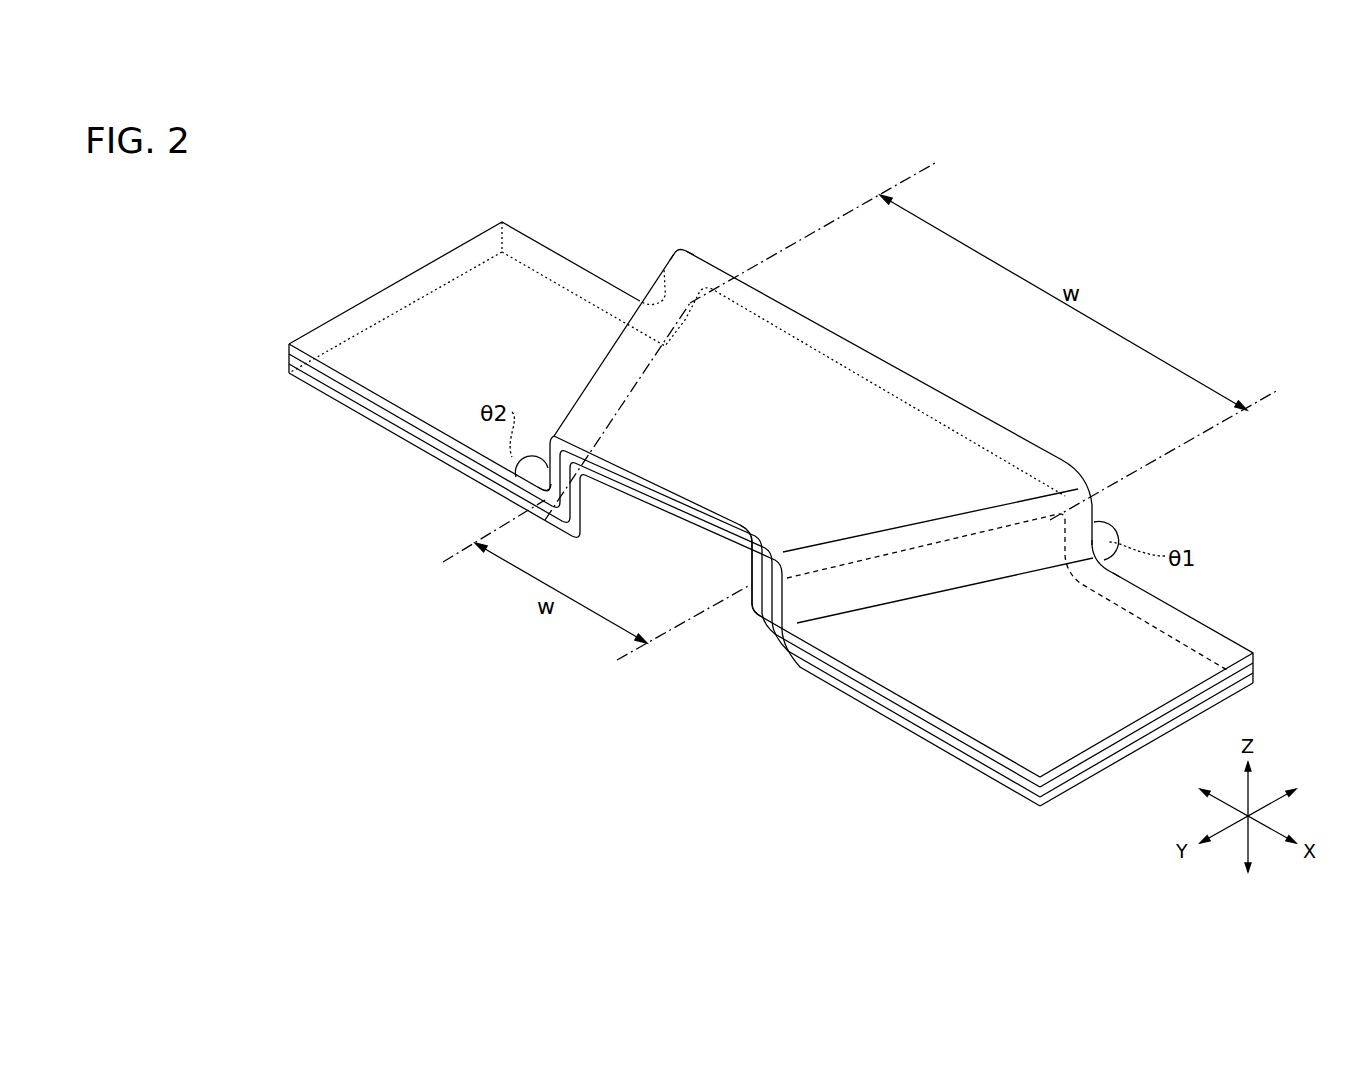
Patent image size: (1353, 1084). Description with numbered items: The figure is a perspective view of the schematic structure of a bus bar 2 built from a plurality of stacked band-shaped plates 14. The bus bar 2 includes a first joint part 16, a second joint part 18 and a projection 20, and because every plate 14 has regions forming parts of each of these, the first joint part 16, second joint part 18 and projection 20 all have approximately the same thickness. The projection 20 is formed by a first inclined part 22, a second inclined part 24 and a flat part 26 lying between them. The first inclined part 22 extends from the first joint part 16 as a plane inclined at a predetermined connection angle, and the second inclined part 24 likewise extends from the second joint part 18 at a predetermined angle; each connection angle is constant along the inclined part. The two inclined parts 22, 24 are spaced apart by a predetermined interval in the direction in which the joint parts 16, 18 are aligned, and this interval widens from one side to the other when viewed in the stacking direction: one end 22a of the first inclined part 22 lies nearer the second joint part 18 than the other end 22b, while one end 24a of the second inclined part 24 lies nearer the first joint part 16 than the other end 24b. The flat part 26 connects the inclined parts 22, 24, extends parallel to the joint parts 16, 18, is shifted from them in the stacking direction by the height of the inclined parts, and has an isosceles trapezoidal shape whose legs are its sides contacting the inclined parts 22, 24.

The bus bar 2 is at (754, 495).
The plate 14 is at (288, 347).
The first joint part 16 is at (1207, 627).
The second joint part 18 is at (545, 245).
The projection 20 is at (946, 394).
The first inclined part 22 is at (1073, 467).
The one end of first inclined part 22a is at (754, 622).
The other end of first inclined part 22b is at (1098, 528).
The second inclined part 24 is at (683, 247).
The one end of second inclined part 24a is at (537, 489).
The other end of second inclined part 24b is at (650, 279).
The flat part 26 is at (866, 351).